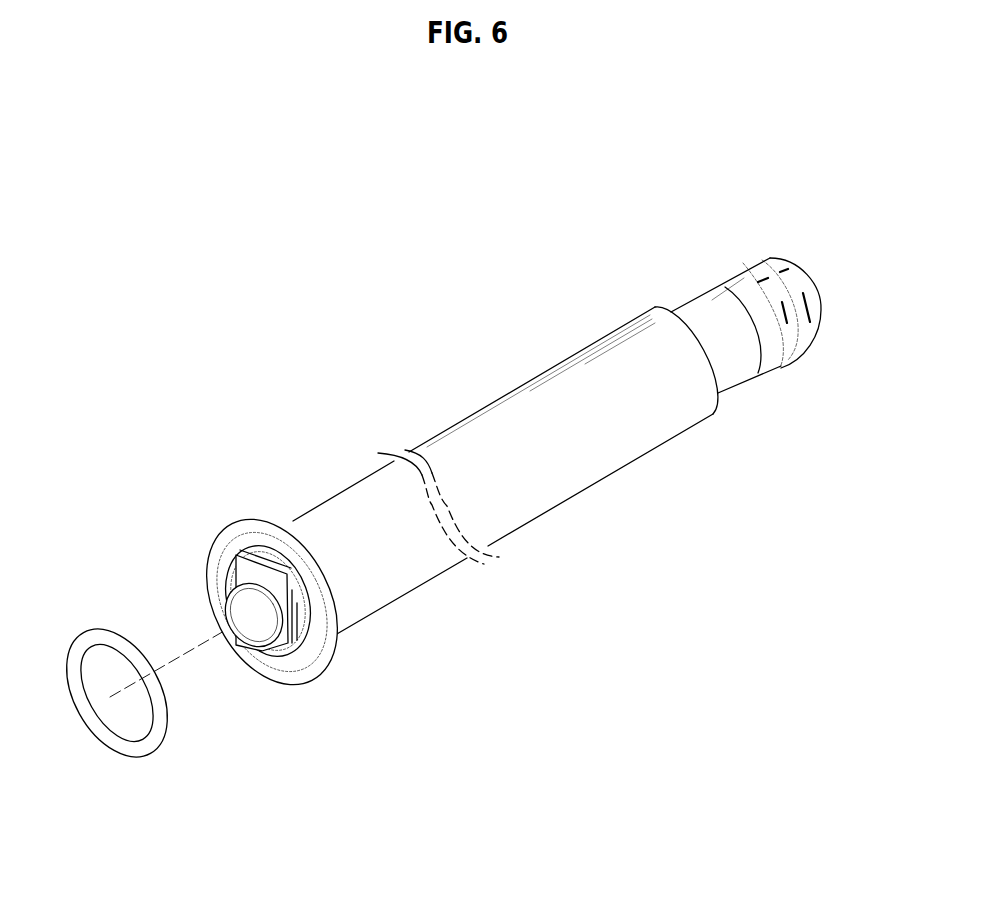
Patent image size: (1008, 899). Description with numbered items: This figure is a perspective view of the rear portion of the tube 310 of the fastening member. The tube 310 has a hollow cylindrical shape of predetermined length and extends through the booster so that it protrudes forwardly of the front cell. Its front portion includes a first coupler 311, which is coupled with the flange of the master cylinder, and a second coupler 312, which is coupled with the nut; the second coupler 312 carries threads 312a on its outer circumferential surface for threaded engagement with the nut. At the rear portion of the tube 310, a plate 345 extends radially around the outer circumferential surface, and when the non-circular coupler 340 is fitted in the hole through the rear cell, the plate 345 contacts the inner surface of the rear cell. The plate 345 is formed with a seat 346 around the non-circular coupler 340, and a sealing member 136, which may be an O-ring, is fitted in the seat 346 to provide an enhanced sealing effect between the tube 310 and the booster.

The tube 310 is at (598, 478).
The first coupler 311 is at (732, 380).
The second coupler 312 is at (779, 367).
The threads 312a is at (788, 289).
The non-circular coupler 340 is at (273, 646).
The plate 345 is at (253, 526).
The seat 346 is at (237, 553).
The sealing member 136 is at (155, 740).